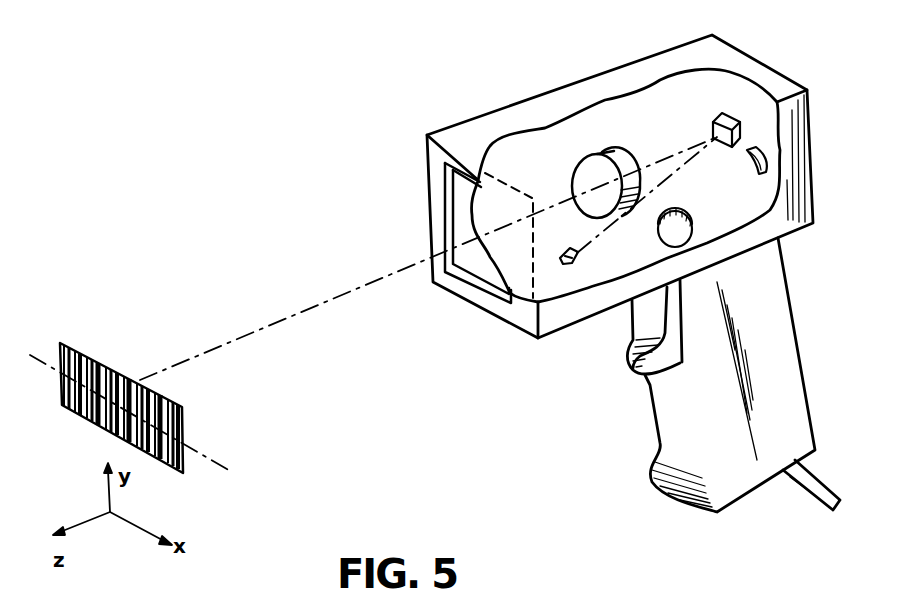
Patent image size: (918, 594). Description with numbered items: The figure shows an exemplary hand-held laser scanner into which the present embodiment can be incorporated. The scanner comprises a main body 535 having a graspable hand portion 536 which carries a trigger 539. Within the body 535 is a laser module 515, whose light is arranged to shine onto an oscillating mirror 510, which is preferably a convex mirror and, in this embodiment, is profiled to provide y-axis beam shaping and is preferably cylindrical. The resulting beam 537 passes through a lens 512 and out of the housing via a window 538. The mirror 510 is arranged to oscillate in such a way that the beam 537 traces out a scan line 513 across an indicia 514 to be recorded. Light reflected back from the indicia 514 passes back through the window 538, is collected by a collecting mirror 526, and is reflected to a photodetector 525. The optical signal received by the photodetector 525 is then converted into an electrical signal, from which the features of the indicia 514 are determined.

The oscillating mirror 510 is at (713, 123).
The lens 512 is at (604, 152).
The scan line 513 is at (45, 362).
The indicia 514 is at (120, 376).
The laser module 515 is at (578, 255).
The photodetector 525 is at (686, 208).
The collecting mirror 526 is at (749, 168).
The main body 535 is at (528, 88).
The graspable hand portion 536 is at (793, 317).
The beam 537 is at (226, 343).
The window 538 is at (462, 190).
The trigger 539 is at (637, 365).